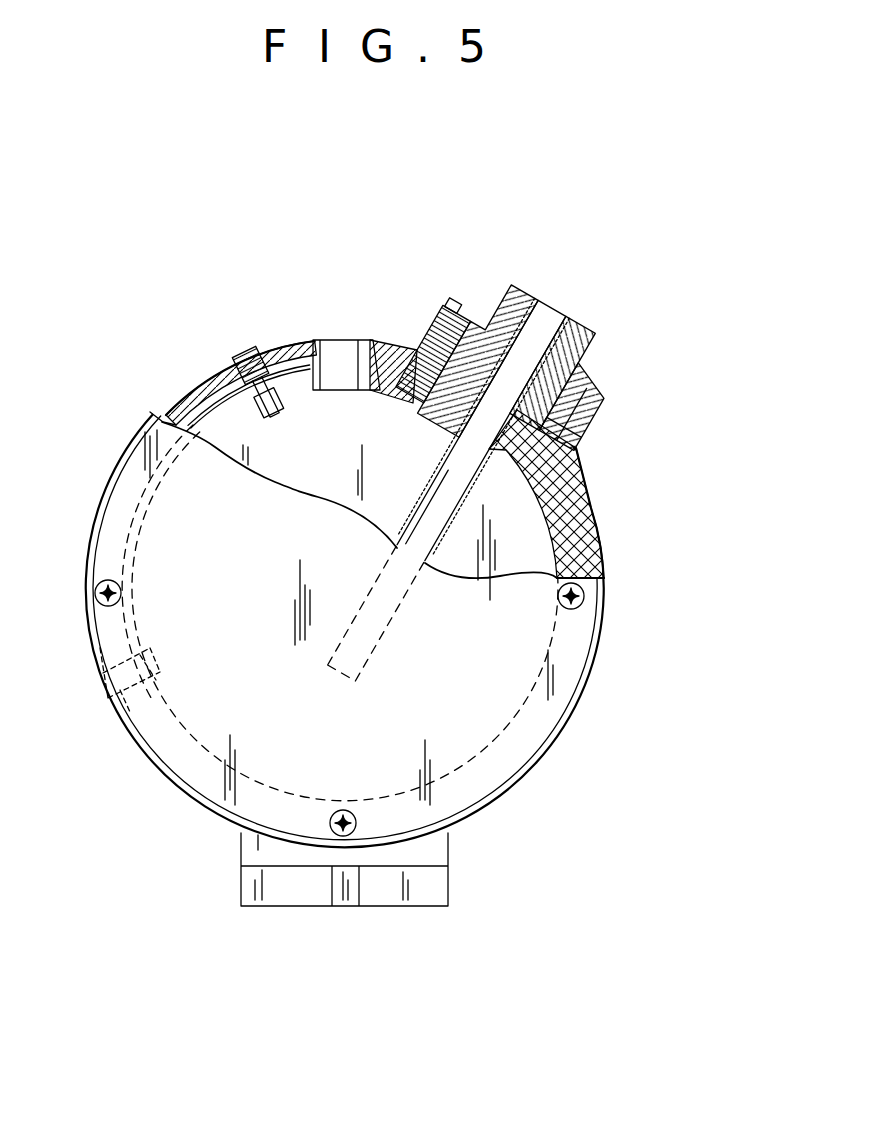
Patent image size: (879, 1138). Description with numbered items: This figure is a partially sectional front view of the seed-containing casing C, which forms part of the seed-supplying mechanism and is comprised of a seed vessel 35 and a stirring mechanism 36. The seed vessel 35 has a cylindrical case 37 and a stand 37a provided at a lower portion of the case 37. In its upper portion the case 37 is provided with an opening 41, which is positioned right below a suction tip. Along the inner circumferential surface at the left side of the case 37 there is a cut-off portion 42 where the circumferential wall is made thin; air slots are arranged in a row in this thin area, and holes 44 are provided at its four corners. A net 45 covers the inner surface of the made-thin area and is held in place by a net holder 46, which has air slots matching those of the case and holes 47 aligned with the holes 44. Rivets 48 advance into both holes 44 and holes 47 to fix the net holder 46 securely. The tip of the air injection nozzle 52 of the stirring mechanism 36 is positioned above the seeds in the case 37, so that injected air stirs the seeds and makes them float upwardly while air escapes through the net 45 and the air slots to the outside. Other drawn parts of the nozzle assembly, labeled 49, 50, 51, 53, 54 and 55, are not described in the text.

The seed-containing casing C is at (207, 192).
The seed vessel 35 is at (158, 370).
The stirring mechanism 36 is at (424, 308).
The cylindrical case 37 is at (190, 797).
The stand 37a is at (420, 908).
The opening 41 is at (385, 398).
The cut-off portion 42 is at (237, 420).
The holes 44 is at (263, 357).
The net 45 is at (213, 447).
The net holder 46 is at (160, 491).
The holes 47 is at (280, 402).
The rivets 48 is at (247, 360).
The nut 49 is at (598, 422).
The housing wall section 50 is at (567, 483).
The washer 51 is at (590, 442).
The air injection nozzle 52 is at (593, 560).
The nut flange 53 is at (605, 392).
The flange 54 is at (580, 380).
The threaded nut 55 is at (470, 305).